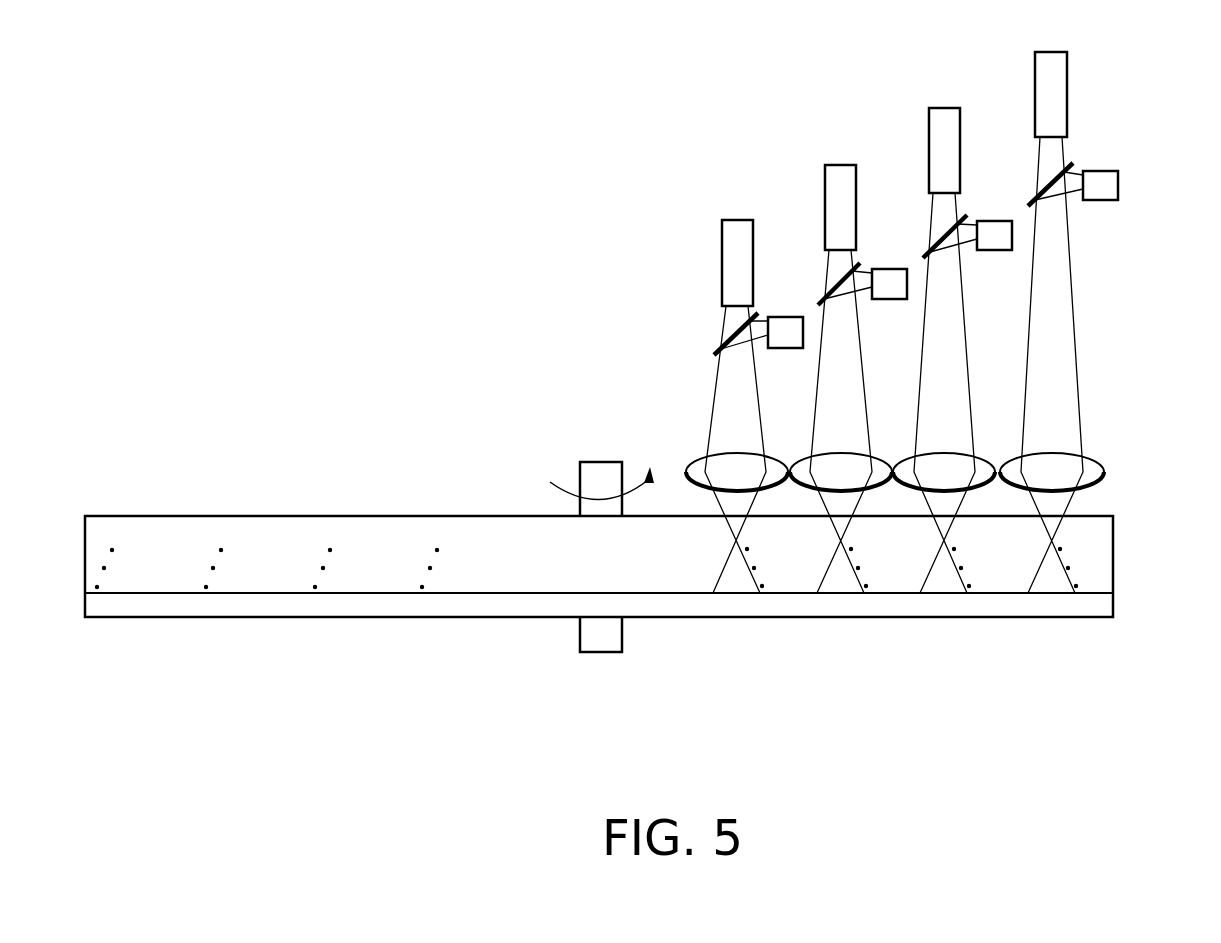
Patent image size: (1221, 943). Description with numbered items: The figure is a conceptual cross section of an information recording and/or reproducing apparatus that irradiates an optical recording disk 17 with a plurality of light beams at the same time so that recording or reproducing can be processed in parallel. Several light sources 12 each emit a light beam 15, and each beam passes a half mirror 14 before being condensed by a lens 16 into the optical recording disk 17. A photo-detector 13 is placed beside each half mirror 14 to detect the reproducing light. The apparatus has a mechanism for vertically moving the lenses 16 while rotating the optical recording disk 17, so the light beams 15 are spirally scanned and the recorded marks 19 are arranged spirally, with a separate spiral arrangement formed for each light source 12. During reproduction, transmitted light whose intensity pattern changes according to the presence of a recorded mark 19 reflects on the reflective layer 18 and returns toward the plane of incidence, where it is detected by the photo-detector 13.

The light source 12 is at (728, 235).
The photo-detector 13 is at (1118, 188).
The half mirror 14 is at (1065, 170).
The light beam 15 is at (1063, 340).
The lens 16 is at (1092, 465).
The optical recording disk 17 is at (1103, 530).
The reflective layer 18 is at (1105, 605).
The recorded mark 19 is at (1078, 590).